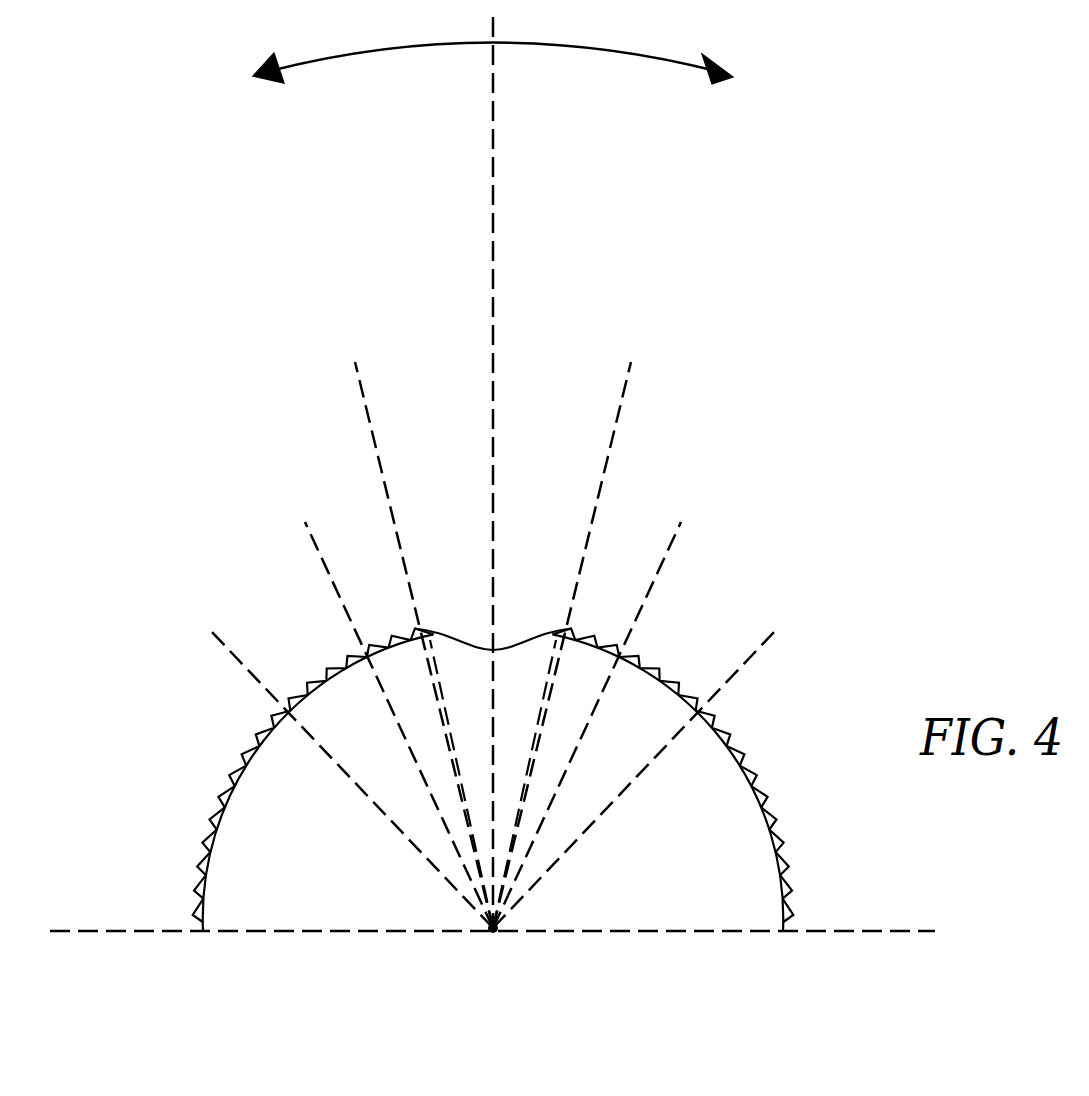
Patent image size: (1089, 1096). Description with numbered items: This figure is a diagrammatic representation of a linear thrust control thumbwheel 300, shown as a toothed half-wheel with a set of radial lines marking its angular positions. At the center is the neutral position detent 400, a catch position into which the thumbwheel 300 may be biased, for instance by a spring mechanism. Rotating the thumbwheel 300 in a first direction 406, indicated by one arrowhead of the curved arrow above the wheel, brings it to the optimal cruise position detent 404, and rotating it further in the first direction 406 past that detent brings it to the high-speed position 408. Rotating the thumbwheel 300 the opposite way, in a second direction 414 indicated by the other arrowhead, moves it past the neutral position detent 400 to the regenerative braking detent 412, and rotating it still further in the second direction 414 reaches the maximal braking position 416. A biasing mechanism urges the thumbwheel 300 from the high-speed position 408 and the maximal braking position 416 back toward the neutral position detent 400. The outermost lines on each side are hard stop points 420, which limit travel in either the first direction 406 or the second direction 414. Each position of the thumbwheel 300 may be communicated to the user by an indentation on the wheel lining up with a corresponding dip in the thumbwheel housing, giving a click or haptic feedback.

The thumbwheel 300 is at (743, 772).
The neutral position detent 400 is at (493, 197).
The optimal cruise position detent 404 is at (627, 383).
The first direction 406 is at (693, 68).
The high-speed position 408 is at (678, 530).
The regenerative braking detent 412 is at (360, 383).
The second direction 414 is at (292, 68).
The maximal braking position 416 is at (307, 530).
The hard stop points 420 is at (207, 633).